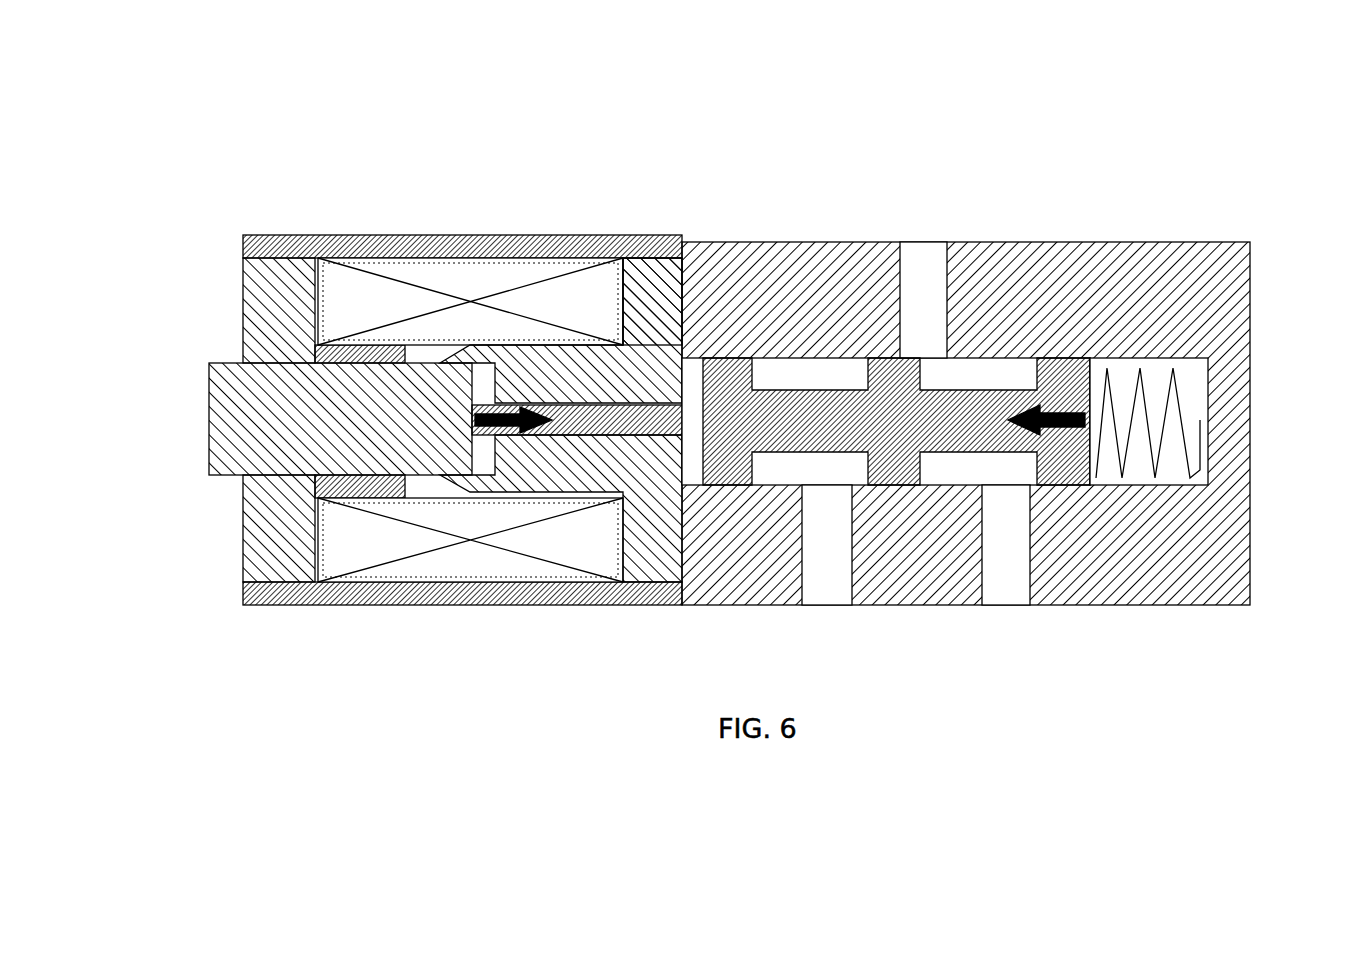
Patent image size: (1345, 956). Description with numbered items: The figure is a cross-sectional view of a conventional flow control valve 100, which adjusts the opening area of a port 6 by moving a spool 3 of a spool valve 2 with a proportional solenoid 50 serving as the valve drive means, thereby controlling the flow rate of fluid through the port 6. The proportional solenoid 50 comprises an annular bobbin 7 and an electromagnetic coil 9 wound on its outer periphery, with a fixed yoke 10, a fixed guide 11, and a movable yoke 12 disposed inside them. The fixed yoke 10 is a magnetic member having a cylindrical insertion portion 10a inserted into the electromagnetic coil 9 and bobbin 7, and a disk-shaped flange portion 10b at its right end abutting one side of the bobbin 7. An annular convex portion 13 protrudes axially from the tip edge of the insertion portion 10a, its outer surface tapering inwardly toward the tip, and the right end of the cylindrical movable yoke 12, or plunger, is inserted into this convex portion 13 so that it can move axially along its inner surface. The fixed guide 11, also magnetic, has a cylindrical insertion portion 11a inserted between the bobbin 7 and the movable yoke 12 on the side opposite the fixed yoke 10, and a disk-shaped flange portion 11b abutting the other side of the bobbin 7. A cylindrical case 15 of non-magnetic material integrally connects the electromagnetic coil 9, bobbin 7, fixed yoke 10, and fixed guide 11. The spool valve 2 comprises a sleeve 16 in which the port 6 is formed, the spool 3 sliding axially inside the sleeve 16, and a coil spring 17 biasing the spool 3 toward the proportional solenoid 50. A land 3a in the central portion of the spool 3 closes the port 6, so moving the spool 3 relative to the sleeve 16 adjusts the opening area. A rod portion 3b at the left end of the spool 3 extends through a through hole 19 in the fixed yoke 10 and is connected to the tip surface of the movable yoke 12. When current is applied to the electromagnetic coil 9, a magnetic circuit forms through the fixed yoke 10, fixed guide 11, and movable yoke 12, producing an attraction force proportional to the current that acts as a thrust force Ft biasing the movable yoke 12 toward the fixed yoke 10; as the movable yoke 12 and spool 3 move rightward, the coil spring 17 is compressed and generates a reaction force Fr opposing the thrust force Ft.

The flow control valve 100 is at (885, 88).
The proportional solenoid 50 is at (462, 162).
The spool valve 2 is at (995, 188).
The cylindrical case 15 is at (320, 237).
The annular convex portion 13 is at (462, 362).
The thrust force Ft is at (498, 362).
The insertion portion 10a is at (570, 360).
The flange portion 10b is at (655, 275).
The land 3a is at (892, 362).
The port 6 is at (922, 270).
The sleeve 16 is at (1128, 297).
The reaction force Fr is at (1180, 262).
The fixed guide 11 is at (242, 305).
The movable yoke 12 is at (205, 400).
The flange portion 11b is at (243, 548).
The coil spring 17 is at (1210, 430).
The insertion portion 11a is at (322, 585).
The electromagnetic coil 9 is at (470, 575).
The bobbin 7 is at (540, 520).
The through hole 19 is at (583, 440).
The fixed yoke 10 is at (643, 440).
The rod portion 3b is at (690, 535).
The spool 3 is at (1005, 455).